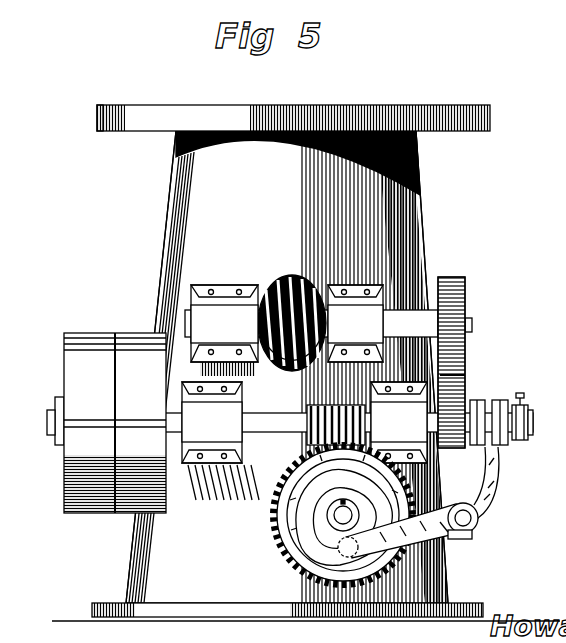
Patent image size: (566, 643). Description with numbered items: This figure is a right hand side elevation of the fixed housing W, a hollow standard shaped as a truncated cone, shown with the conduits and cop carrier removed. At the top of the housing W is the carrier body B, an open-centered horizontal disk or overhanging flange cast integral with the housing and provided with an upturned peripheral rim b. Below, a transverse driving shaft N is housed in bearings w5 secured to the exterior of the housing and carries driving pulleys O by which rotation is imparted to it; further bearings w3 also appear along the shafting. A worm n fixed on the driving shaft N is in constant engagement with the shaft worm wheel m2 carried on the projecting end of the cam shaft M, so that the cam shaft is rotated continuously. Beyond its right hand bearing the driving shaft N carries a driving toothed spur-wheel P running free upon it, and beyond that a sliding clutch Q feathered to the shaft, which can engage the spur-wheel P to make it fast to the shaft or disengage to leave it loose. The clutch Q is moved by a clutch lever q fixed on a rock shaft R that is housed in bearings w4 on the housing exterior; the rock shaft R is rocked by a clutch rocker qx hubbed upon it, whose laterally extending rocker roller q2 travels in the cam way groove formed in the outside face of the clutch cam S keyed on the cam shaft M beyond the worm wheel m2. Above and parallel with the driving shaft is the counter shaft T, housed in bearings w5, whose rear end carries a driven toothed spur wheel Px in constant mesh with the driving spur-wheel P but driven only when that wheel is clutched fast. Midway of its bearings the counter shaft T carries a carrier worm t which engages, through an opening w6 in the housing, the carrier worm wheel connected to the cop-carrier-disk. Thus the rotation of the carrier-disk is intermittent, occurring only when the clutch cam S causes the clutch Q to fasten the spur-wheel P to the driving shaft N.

The carrier body B is at (483, 118).
The upturned peripheral rim b is at (100, 106).
The fixed housing W is at (287, 367).
The driving shaft N is at (48, 421).
The driving pulleys O is at (115, 423).
The worm n is at (309, 412).
The bearings for lower shaft w3 is at (304, 441).
The bearings w5 is at (287, 330).
The opening w6 is at (294, 371).
The carrier worm t is at (285, 300).
The counter shaft T is at (472, 325).
The driven toothed spur wheel Px is at (466, 283).
The sliding clutch Q is at (500, 400).
The clutch lever q is at (499, 476).
The driving toothed spur-wheel P is at (412, 518).
The rock shaft R is at (480, 520).
The bearings w4 is at (472, 538).
The clutch rocker qx is at (442, 526).
The rocker roller q2 is at (346, 557).
The clutch cam S is at (298, 550).
The cam shaft M is at (338, 522).
The shaft worm wheel m2 is at (272, 504).